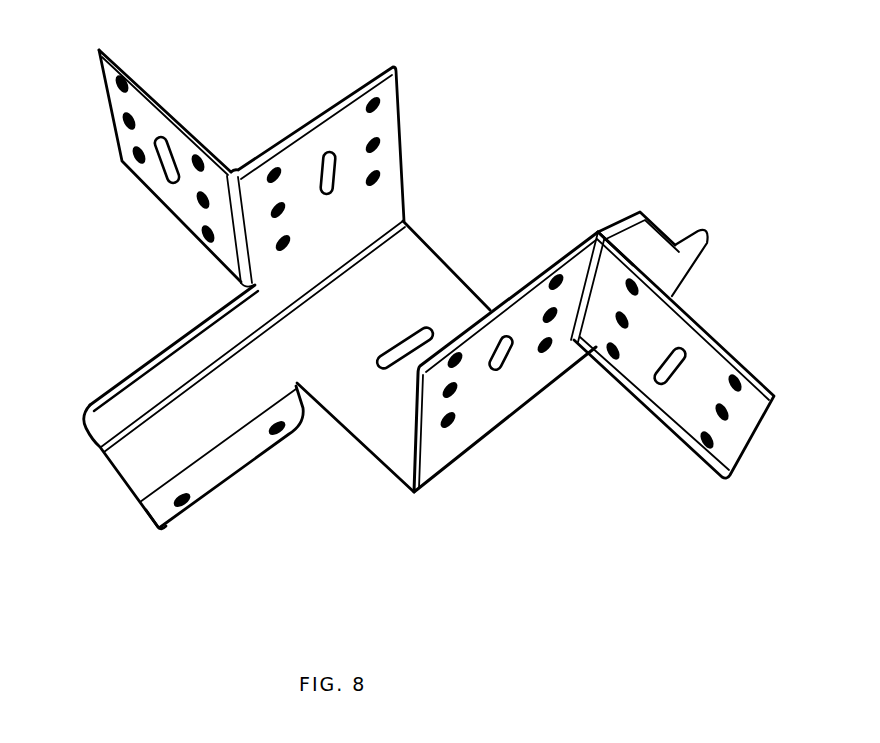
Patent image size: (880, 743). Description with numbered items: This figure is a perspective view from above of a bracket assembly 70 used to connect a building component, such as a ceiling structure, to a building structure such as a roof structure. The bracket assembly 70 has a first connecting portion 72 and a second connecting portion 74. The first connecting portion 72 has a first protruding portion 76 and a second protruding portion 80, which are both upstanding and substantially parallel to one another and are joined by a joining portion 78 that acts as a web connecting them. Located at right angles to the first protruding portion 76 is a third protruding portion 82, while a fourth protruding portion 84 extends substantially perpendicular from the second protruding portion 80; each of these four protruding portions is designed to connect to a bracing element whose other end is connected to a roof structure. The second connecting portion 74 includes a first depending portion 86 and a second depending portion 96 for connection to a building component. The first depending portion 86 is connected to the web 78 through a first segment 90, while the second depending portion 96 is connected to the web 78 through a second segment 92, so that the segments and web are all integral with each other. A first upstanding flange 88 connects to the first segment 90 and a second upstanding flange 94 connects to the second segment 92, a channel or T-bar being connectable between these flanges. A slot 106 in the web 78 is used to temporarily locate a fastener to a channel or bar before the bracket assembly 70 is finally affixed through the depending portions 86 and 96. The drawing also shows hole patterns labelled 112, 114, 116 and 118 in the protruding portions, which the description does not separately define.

The bracket assembly 70 is at (70, 293).
The first connecting portion 72 is at (452, 168).
The second connecting portion 74 is at (247, 487).
The first protruding portion 76 is at (370, 108).
The joining portion 78 is at (380, 332).
The second protruding portion 80 is at (489, 418).
The third protruding portion 82 is at (132, 169).
The fourth protruding portion 84 is at (740, 352).
The first depending portion 86 is at (150, 533).
The first upstanding flange 88 is at (147, 360).
The first segment 90 is at (150, 447).
The second segment 92 is at (655, 243).
The second upstanding flange 94 is at (700, 257).
The second depending portion 96 is at (615, 222).
The slot 106 is at (377, 370).
The fastener holes 112 is at (193, 160).
The fastener holes 114 is at (268, 163).
The fastener holes 116 is at (460, 412).
The fastener holes 118 is at (700, 453).